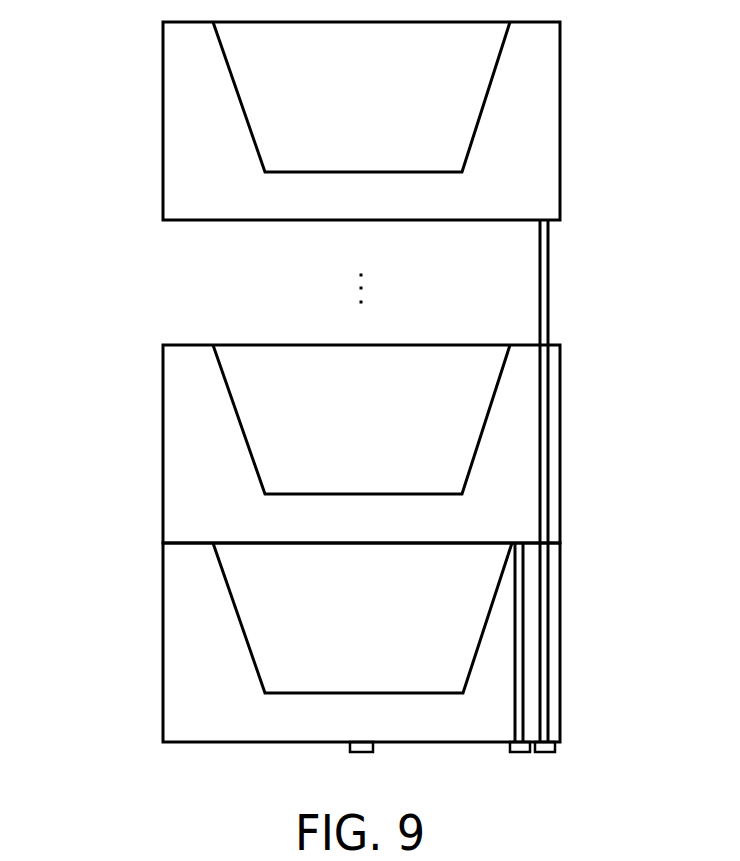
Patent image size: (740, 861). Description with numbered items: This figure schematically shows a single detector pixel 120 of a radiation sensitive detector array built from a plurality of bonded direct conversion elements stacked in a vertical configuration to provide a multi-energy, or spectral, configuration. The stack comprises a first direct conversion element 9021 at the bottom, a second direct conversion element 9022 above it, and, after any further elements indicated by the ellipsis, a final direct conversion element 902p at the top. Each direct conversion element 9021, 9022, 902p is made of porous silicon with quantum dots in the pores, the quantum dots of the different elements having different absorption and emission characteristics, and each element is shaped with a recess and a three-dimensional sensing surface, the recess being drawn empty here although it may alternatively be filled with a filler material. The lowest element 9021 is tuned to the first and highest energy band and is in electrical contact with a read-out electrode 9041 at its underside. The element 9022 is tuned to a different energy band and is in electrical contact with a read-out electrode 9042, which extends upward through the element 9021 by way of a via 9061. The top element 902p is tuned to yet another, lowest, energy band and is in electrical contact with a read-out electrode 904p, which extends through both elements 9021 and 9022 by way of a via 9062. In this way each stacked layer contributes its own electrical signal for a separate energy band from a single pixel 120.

The detector pixel 120 is at (135, 71).
The direct conversion element 902p is at (361, 121).
The direct conversion element 9022 is at (361, 444).
The direct conversion element 9021 is at (361, 642).
The via 9062 is at (548, 450).
The via 9061 is at (523, 637).
The read out electrode 9041 is at (350, 747).
The read out electrode 9042 is at (508, 746).
The read out electrode 904p is at (555, 748).